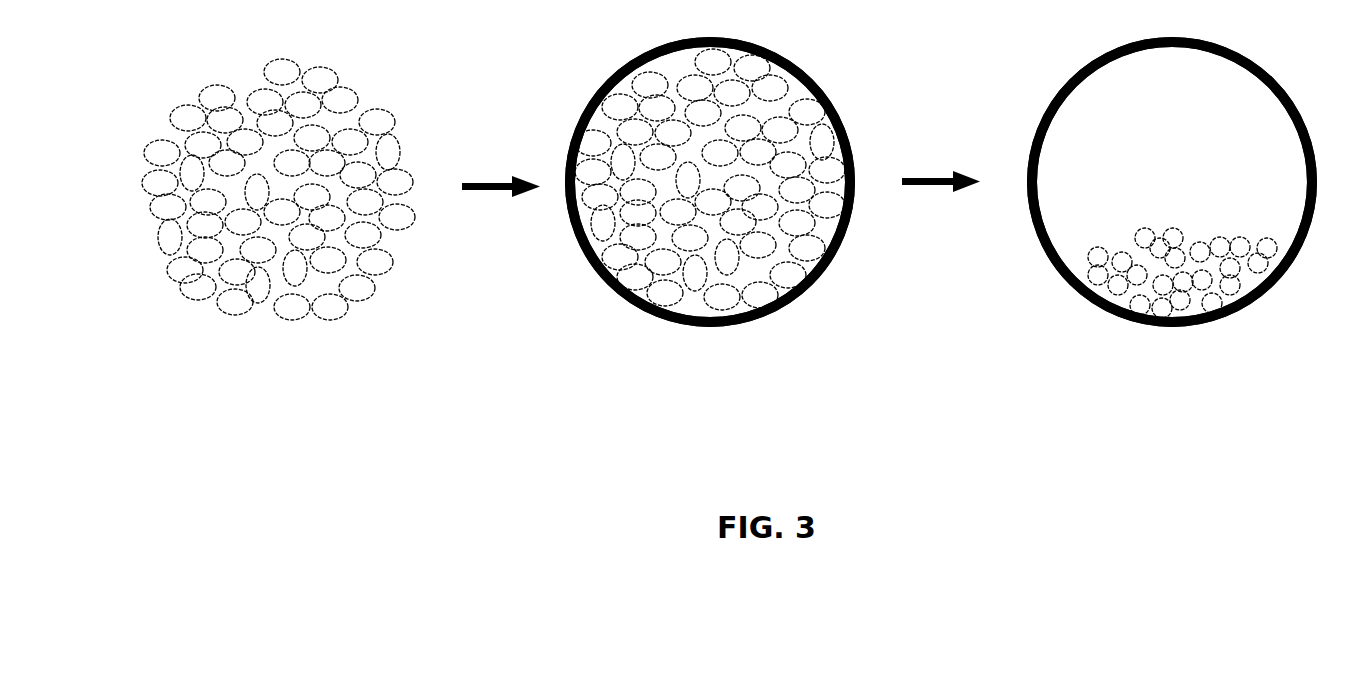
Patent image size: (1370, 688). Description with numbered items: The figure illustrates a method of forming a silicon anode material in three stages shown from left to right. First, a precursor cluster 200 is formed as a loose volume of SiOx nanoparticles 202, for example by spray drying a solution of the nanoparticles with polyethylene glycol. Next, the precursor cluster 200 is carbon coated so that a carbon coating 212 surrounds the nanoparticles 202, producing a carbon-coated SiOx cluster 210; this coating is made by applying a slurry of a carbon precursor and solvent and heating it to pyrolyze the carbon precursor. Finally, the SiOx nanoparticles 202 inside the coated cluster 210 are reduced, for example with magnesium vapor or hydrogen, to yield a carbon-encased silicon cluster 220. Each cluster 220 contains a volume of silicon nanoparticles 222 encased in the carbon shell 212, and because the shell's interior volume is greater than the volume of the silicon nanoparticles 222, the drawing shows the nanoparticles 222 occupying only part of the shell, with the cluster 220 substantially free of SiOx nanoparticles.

The precursor cluster 200 is at (386, 60).
The SiOx nanoparticles 202 is at (377, 285).
The carbon-coated SiOx cluster 210 is at (810, 32).
The carbon coating 212 is at (713, 328).
The carbon-encased silicon cluster 220 is at (1290, 39).
The silicon nanoparticles 222 is at (1265, 262).